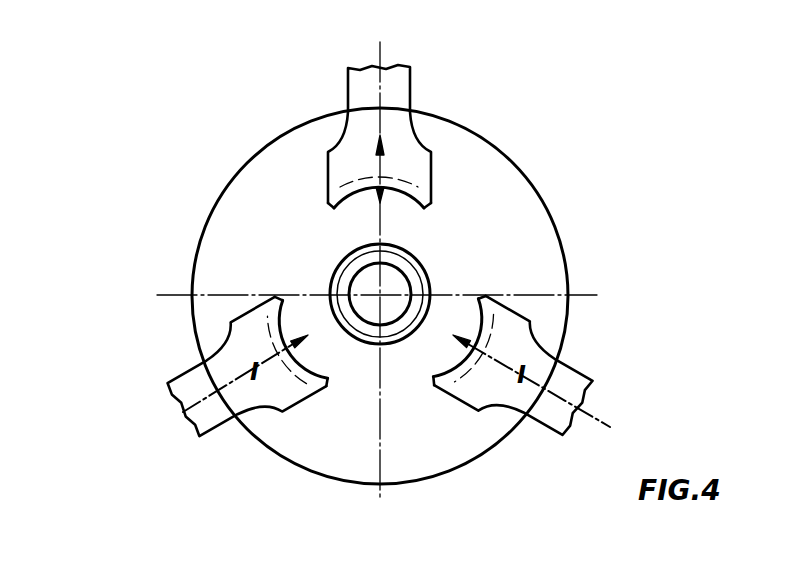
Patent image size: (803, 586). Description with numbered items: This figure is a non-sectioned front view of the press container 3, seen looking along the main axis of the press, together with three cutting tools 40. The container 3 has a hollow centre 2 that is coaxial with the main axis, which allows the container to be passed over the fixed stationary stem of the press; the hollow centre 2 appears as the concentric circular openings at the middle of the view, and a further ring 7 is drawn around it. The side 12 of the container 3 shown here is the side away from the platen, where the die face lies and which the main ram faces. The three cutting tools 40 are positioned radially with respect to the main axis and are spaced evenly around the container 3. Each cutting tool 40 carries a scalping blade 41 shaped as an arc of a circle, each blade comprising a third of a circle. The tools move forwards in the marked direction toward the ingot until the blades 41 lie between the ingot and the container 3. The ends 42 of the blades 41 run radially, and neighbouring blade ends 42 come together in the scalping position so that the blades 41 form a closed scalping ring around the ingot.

The container 3 is at (504, 124).
The side of the container 12 is at (506, 237).
The hollow centre 2 is at (382, 285).
The center ring 7 is at (345, 278).
The cutting tool 40 is at (357, 110).
The scalping blade 41 is at (403, 194).
The blade end 42 is at (422, 207).